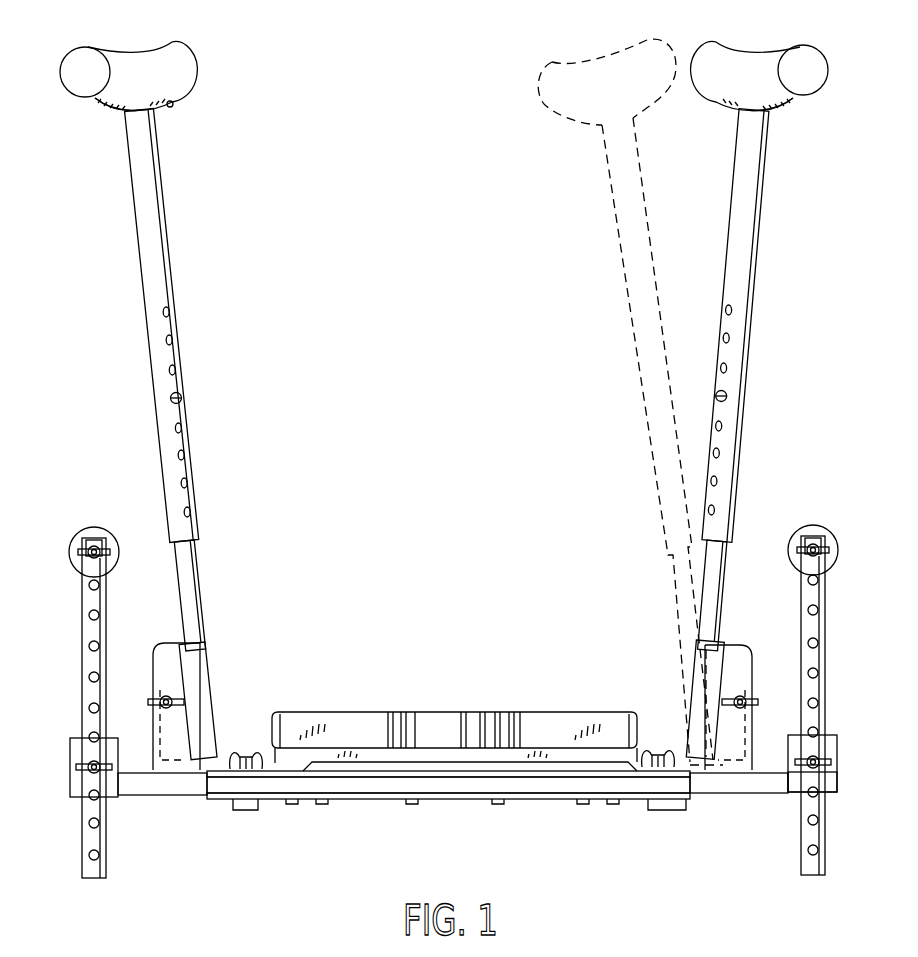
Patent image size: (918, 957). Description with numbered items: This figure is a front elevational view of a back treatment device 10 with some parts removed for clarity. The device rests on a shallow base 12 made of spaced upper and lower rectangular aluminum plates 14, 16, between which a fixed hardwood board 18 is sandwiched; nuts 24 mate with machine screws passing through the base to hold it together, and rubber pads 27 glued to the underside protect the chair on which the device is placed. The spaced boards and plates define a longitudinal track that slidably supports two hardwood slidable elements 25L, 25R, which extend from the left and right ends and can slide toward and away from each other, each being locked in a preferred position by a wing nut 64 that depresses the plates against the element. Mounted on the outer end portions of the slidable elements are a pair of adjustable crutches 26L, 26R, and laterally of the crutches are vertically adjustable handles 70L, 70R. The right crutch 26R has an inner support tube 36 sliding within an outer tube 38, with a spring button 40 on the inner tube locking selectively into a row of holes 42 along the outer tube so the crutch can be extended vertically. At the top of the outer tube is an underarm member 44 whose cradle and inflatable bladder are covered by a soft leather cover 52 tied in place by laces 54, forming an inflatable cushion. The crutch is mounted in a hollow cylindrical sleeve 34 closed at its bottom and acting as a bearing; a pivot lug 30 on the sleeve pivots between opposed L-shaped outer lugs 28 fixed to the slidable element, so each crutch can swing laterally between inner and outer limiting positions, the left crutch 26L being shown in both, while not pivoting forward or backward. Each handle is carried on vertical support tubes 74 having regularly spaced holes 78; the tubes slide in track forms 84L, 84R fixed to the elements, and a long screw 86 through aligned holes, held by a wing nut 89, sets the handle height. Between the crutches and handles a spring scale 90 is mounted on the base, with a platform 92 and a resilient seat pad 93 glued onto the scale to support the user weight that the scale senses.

The back treatment device 10 is at (422, 84).
The base 12 is at (534, 800).
The upper rectangular aluminum plate 14 is at (205, 797).
The lower rectangular aluminum plate 16 is at (462, 800).
The fixed hardwood board 18 is at (378, 786).
The nut 24 is at (322, 805).
The right slidable element 25R is at (176, 797).
The left slidable element 25L is at (765, 797).
The right crutch 26R is at (141, 278).
The left crutch 26L is at (764, 213).
The rubber pad 27 is at (250, 810).
The L-shaped outer lug 28 is at (152, 718).
The pivot lug 30 is at (156, 748).
The hollow cylindrical sleeve 34 is at (220, 672).
The inner support tube 36 is at (179, 598).
The outer tube 38 is at (162, 452).
The spring button 40 is at (186, 397).
The row of holes 42 is at (171, 311).
The underarm member 44 is at (197, 60).
The soft leather cover 52 is at (62, 88).
The laces 54 is at (108, 110).
The wing nut 64 is at (236, 748).
The right handle 70R is at (80, 530).
The left handle 70L is at (806, 528).
The vertical support tube 74 is at (826, 660).
The regularly spaced holes 78 is at (816, 610).
The right track form 84R is at (70, 762).
The left track form 84L is at (836, 745).
The long screw 86 is at (810, 762).
The wing nut 89 is at (838, 772).
The spring scale 90 is at (549, 712).
The platform 92 is at (336, 726).
The resilient pad 93 is at (590, 712).